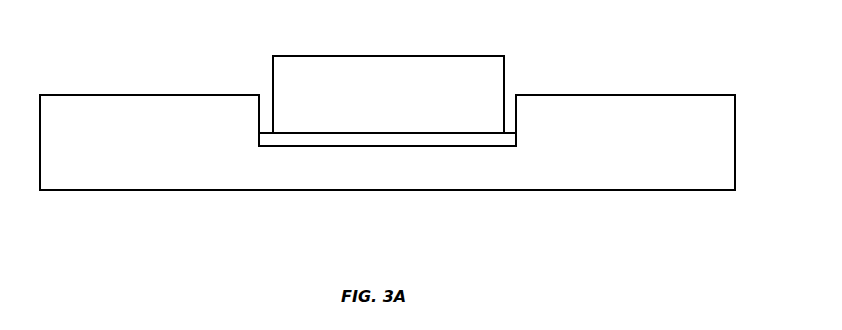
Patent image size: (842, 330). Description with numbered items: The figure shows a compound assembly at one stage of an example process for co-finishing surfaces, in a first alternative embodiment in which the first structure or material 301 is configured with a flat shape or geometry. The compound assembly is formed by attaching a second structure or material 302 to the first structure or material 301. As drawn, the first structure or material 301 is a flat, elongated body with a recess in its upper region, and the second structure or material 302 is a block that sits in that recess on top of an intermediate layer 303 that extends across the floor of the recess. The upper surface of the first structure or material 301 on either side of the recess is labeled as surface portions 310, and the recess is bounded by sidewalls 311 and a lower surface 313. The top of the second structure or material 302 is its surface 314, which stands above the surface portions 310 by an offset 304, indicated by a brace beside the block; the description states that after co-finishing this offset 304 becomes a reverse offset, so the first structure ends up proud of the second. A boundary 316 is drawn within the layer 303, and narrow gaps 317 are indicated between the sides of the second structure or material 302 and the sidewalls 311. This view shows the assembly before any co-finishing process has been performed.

The first structure or material 301 is at (668, 196).
The second structure or material 302 is at (460, 51).
The adhesive layer 303 is at (460, 157).
The offset 304 is at (509, 57).
The substrate top surface portion 310 is at (127, 95).
The cavity sidewall 311 is at (258, 103).
The cavity bottom surface 313 is at (350, 147).
The die top surface 314 is at (390, 55).
The adhesive layer top surface 316 is at (411, 138).
The gap 317 is at (255, 121).